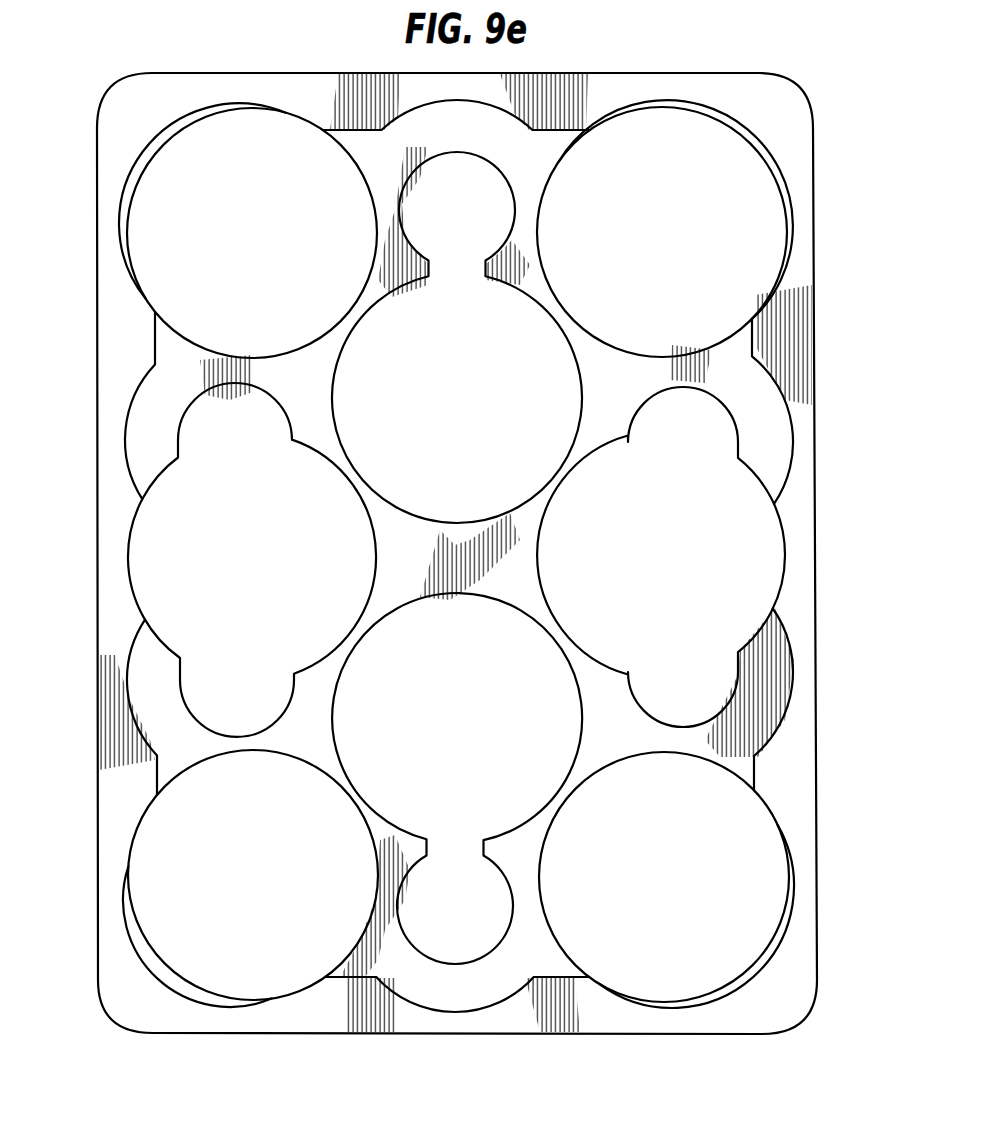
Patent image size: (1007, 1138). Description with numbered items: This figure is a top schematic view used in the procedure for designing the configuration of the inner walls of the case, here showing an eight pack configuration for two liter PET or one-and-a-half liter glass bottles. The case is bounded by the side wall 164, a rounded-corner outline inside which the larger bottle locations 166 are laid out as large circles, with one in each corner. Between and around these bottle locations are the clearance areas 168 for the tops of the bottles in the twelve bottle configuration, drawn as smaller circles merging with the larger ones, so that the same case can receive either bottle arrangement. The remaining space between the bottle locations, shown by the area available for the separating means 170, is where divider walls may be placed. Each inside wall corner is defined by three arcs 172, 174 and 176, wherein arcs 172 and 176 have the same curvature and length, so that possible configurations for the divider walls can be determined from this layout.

The side wall 164 is at (697, 73).
The larger bottle locations 166 is at (175, 234).
The clearance areas 168 is at (222, 700).
The area available for the separating means 170 is at (175, 375).
The arc 172 is at (630, 1000).
The arc 174 is at (763, 975).
The arc 176 is at (780, 832).